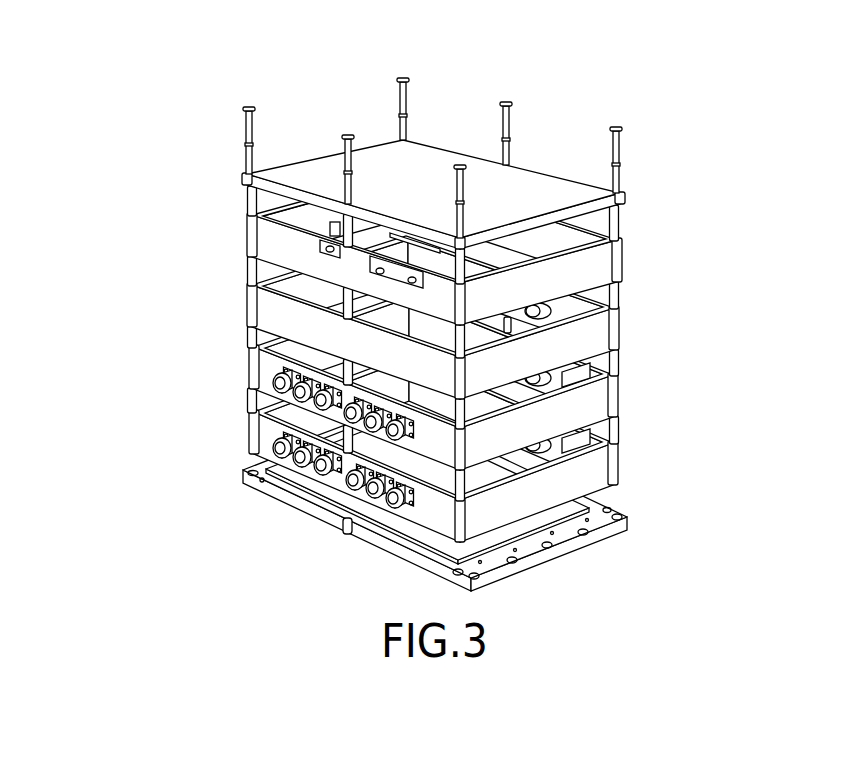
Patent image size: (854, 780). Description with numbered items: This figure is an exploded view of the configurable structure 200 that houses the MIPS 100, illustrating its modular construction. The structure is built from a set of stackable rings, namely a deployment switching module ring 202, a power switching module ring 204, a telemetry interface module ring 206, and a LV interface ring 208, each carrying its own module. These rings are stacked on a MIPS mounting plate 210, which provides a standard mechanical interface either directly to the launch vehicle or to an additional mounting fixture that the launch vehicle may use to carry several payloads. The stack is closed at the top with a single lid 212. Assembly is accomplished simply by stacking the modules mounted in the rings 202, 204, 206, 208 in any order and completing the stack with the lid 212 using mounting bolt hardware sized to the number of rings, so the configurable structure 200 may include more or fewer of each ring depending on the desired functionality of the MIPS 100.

The MIPS 100 is at (146, 50).
The configurable structure 200 is at (280, 84).
The deployment switching module ring 202 is at (265, 438).
The power switching module ring 204 is at (268, 372).
The telemetry interface module ring 206 is at (260, 233).
The LV interface ring 208 is at (270, 302).
The MIPS mounting plate 210 is at (257, 488).
The lid 212 is at (262, 184).